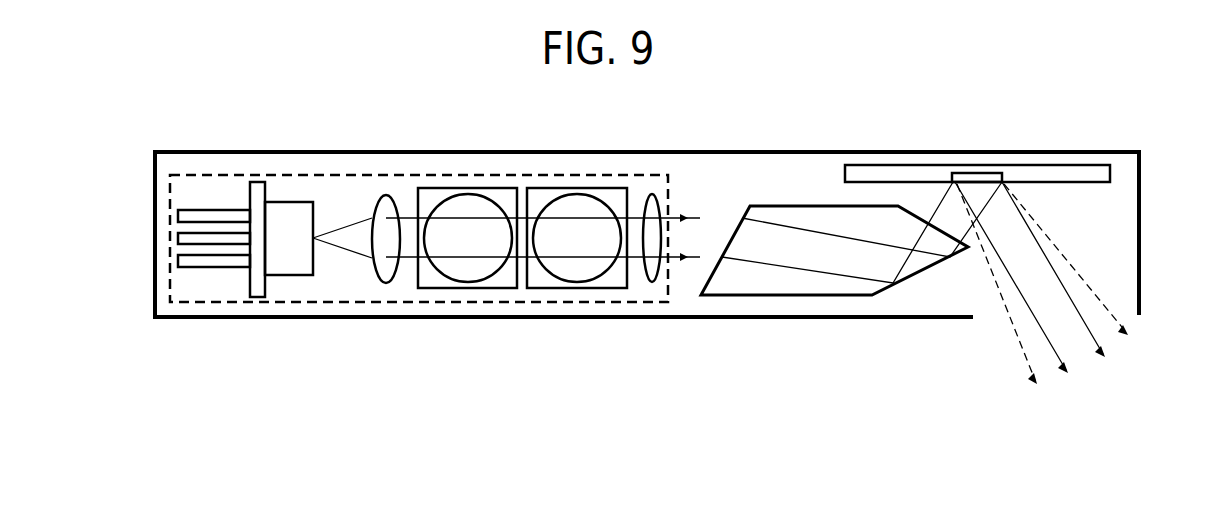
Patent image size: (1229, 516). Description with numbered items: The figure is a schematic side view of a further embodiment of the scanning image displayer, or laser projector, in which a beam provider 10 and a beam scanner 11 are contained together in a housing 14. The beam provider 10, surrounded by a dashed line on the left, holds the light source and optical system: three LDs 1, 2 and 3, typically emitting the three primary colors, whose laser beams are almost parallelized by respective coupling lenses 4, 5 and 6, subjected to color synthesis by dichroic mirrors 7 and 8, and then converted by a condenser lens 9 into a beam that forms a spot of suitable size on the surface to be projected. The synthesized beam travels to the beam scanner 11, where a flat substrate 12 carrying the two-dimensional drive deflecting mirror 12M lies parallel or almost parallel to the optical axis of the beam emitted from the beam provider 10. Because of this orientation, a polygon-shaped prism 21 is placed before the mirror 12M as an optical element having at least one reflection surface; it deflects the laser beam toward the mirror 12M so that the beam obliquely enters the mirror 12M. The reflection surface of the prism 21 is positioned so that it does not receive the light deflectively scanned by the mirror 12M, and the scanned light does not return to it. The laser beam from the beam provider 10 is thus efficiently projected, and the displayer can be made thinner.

The LD 1 is at (291, 276).
The LD 2 is at (468, 199).
The LD 3 is at (577, 199).
The coupling lens 4 is at (384, 284).
The coupling lens 5 is at (466, 194).
The coupling lens 6 is at (575, 194).
The dichroic mirror 7 is at (467, 239).
The dichroic mirror 8 is at (577, 239).
The condenser lens 9 is at (650, 196).
The beam provider 10 is at (355, 173).
The beam scanner 11 is at (1106, 253).
The flat substrate 12 is at (1062, 165).
The deflecting mirror 12M is at (978, 172).
The housing 14 is at (637, 318).
The polygon-shaped prism 21 is at (795, 297).